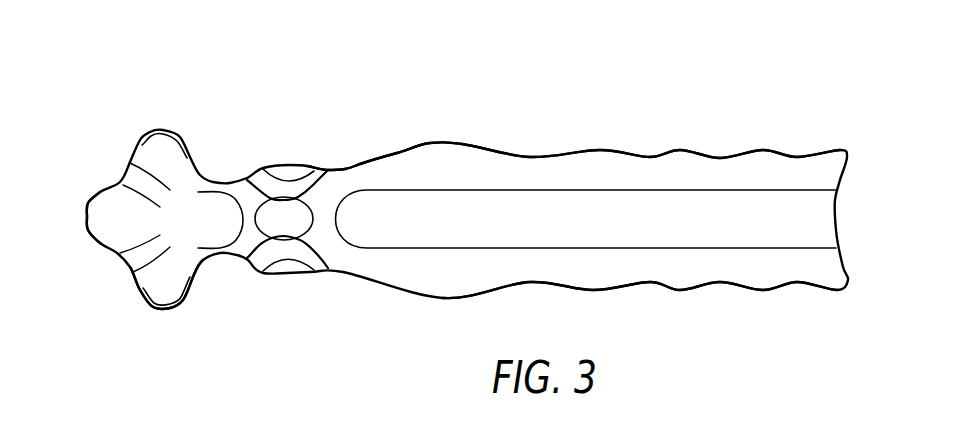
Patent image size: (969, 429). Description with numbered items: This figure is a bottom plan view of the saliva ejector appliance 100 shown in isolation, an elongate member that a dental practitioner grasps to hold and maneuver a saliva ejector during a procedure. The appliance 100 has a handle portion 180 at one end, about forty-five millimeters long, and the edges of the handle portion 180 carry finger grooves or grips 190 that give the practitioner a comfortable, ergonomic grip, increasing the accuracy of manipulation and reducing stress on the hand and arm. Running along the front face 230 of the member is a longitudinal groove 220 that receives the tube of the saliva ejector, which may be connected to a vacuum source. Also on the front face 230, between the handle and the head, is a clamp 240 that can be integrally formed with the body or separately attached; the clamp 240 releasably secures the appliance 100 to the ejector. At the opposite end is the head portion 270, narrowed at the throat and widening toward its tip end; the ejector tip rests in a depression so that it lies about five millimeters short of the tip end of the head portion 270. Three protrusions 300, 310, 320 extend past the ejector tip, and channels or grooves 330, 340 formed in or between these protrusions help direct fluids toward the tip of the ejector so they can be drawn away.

The saliva ejector appliance 100 is at (590, 132).
The handle portion 180 is at (755, 277).
The finger grooves or grips 190 is at (722, 158).
The longitudinal groove 220 is at (380, 220).
The front face 230 is at (433, 150).
The clamp 240 is at (288, 263).
The head portion 270 is at (180, 318).
The protrusion 300 is at (158, 143).
The protrusion 310 is at (97, 218).
The protrusion 320 is at (157, 283).
The channel or groove 330 is at (130, 180).
The channel or groove 340 is at (130, 260).